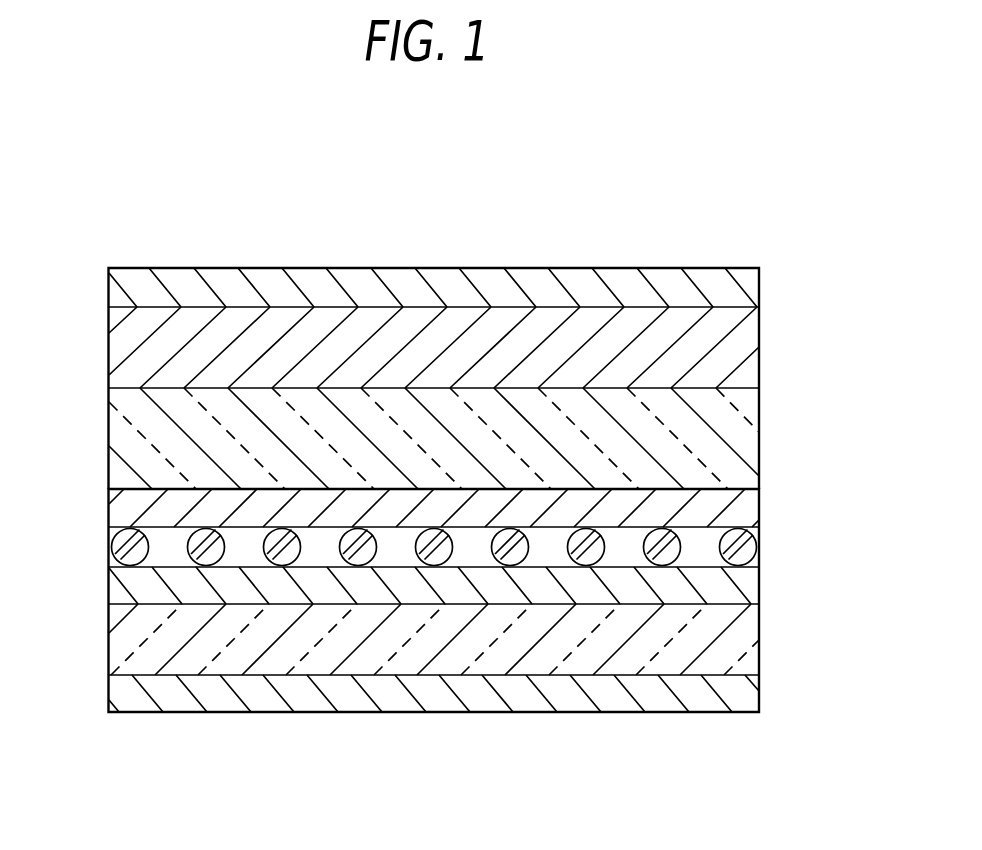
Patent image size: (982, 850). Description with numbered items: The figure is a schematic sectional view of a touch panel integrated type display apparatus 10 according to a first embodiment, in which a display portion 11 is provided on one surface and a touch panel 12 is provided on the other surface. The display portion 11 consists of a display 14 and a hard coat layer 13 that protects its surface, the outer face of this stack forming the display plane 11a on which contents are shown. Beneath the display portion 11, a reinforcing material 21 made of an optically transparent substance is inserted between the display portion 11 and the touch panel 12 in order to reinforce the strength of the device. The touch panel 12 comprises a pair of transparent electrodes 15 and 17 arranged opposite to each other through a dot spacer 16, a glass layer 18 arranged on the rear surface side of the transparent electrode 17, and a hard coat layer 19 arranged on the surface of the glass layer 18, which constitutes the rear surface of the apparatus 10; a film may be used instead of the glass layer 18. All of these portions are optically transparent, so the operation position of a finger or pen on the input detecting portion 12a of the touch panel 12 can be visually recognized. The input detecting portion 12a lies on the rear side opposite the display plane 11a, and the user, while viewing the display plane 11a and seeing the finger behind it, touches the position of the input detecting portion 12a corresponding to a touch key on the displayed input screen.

The touch panel integrated type display apparatus 10 is at (285, 211).
The display portion 11 is at (87, 270).
The display plane 11a is at (436, 260).
The touch panel 12 is at (90, 492).
The input detecting portion 12a is at (434, 724).
The hard coat layer 13 is at (752, 287).
The display 14 is at (752, 343).
The reinforcing material 21 is at (752, 438).
The transparent electrode 15 is at (752, 507).
The dot spacer 16 is at (756, 547).
The transparent electrode 17 is at (752, 585).
The glass layer 18 is at (752, 640).
The hard coat layer 19 is at (752, 697).